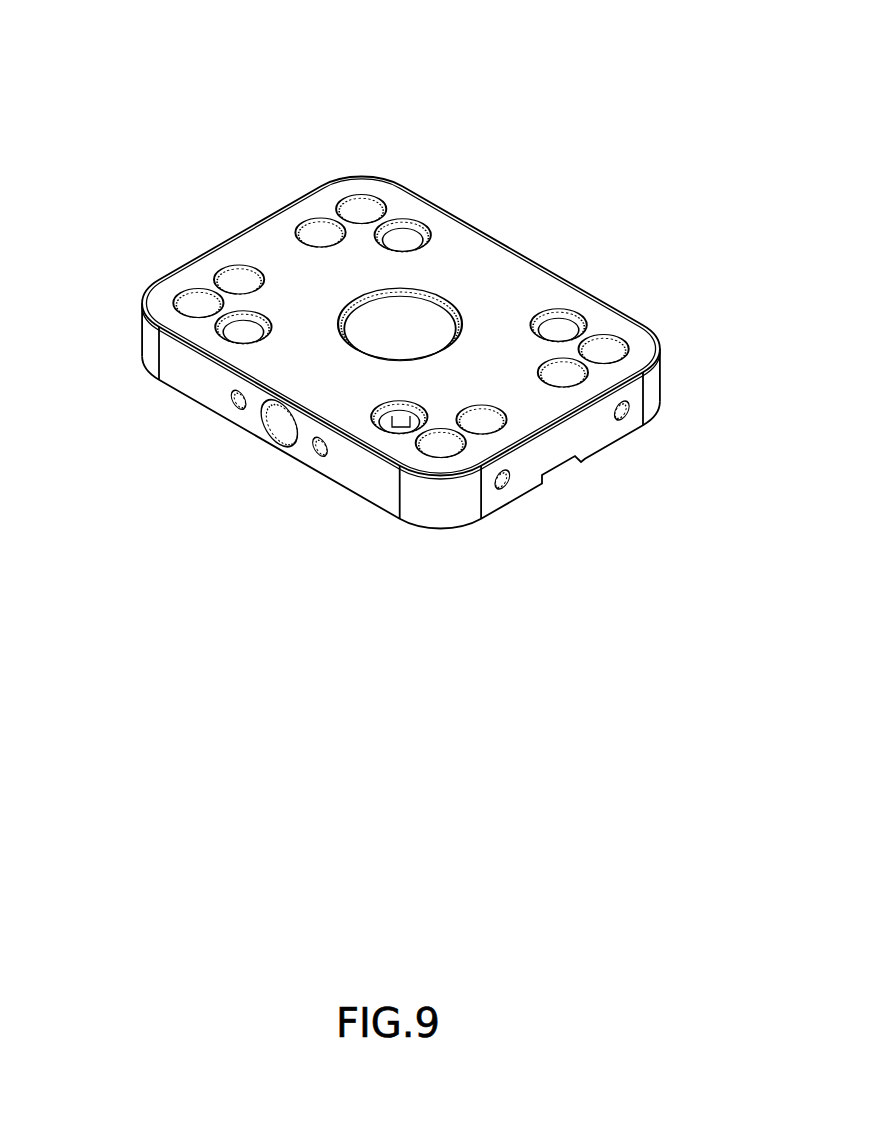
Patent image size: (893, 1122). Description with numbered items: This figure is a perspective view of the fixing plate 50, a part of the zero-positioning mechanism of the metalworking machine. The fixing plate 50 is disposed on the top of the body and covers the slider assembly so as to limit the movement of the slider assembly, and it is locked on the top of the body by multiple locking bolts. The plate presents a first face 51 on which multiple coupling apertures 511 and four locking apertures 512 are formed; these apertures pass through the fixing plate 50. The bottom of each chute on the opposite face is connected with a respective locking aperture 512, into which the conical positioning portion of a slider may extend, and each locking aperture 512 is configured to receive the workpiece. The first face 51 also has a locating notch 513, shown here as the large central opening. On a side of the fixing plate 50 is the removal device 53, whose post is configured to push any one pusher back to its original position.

The fixing plate 50 is at (613, 442).
The first face 51 is at (488, 267).
The coupling apertures 511 is at (363, 208).
The locking apertures 512 is at (403, 238).
The locating notch 513 is at (417, 317).
The removal device 53 is at (280, 420).